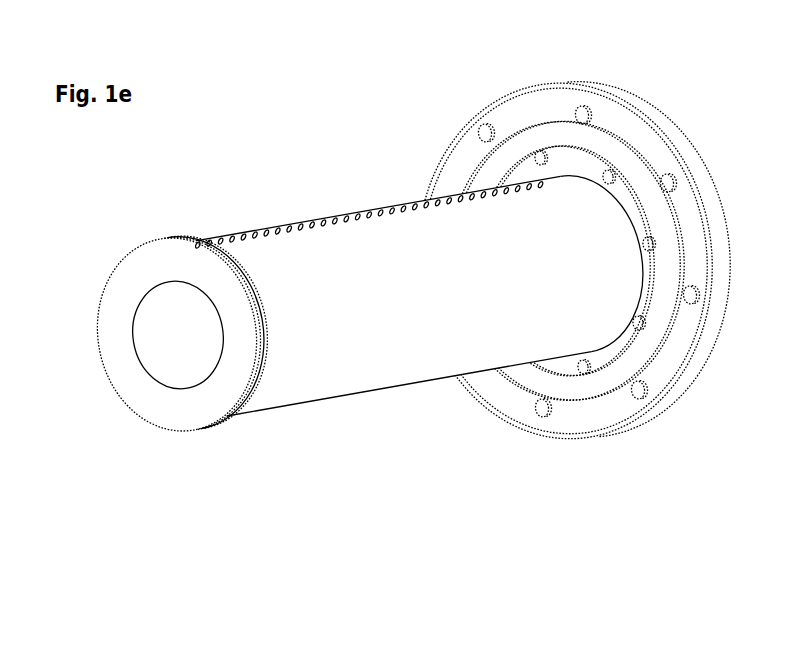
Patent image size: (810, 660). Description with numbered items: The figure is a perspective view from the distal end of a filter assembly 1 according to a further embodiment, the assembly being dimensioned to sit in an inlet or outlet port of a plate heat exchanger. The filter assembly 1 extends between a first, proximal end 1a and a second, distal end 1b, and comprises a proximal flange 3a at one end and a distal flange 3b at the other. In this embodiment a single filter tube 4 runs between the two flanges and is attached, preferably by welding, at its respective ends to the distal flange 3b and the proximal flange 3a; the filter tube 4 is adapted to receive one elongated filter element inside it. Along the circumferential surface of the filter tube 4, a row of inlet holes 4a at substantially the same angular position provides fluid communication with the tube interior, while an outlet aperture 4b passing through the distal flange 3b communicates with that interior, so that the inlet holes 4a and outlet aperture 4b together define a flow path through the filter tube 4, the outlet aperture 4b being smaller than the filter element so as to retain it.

The filter assembly 1 is at (391, 324).
The proximal end 1a is at (588, 278).
The distal end 1b is at (154, 405).
The proximal flange 3a is at (523, 92).
The distal flange 3b is at (178, 428).
The filter tube 4 is at (335, 210).
The inlet holes 4a is at (240, 233).
The outlet aperture 4b is at (133, 322).